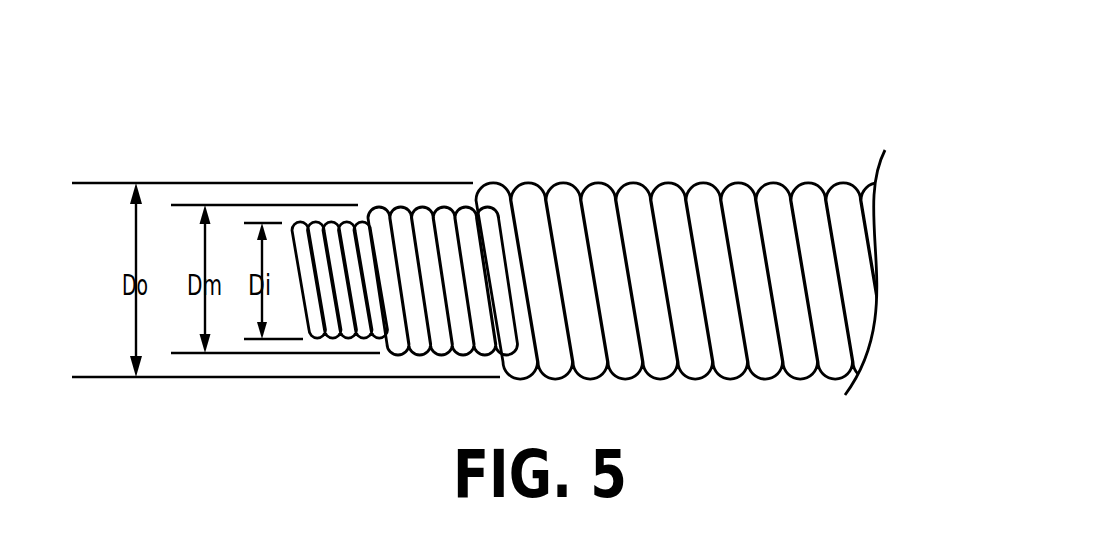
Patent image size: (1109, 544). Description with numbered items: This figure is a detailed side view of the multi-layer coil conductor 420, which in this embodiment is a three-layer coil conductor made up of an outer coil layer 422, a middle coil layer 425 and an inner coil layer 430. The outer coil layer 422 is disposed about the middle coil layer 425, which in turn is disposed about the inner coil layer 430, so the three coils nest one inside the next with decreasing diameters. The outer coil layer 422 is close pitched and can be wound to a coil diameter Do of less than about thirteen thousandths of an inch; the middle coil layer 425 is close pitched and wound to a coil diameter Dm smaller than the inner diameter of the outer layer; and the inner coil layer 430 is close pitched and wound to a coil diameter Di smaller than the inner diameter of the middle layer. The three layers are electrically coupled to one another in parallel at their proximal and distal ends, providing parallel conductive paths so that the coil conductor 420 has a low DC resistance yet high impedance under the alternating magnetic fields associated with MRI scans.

The multi-layer coil conductor 420 is at (616, 275).
The outer coil layer 422 is at (632, 183).
The middle coil layer 425 is at (420, 207).
The inner coil layer 430 is at (352, 335).